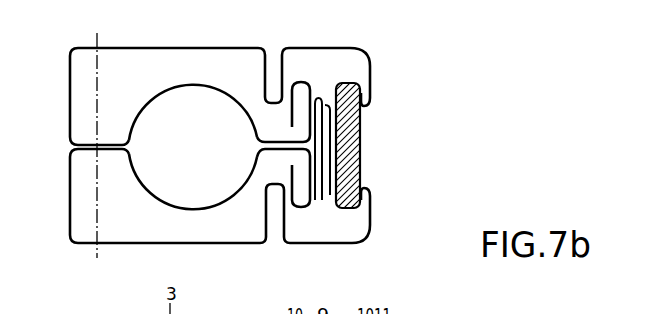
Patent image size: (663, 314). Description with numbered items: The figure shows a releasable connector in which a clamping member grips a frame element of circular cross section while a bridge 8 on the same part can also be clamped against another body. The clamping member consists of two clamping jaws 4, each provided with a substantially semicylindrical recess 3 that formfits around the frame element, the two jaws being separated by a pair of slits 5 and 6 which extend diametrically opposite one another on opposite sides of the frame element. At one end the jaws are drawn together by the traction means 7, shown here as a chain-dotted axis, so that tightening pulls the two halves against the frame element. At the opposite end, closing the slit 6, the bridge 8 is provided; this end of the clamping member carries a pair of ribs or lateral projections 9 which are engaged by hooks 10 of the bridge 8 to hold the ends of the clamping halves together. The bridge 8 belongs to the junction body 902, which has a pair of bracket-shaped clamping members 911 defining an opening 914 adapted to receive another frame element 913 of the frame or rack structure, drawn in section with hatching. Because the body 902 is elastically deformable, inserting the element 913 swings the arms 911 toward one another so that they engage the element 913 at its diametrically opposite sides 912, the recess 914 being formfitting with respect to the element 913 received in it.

The semicylindrical recess 3 is at (160, 76).
The clamping jaw 4 is at (108, 103).
The slit 5 is at (72, 149).
The slit 6 is at (283, 147).
The traction means 7 is at (97, 70).
The bridge 8 is at (322, 126).
The rib or lateral projection 9 is at (297, 100).
The hook 10 is at (287, 70).
The junction body 902 is at (380, 44).
The clamping member (arm) 911 is at (343, 75).
The diametrically opposite side 912 is at (360, 81).
The other frame element 913 is at (358, 165).
The opening (recess) 914 is at (382, 121).